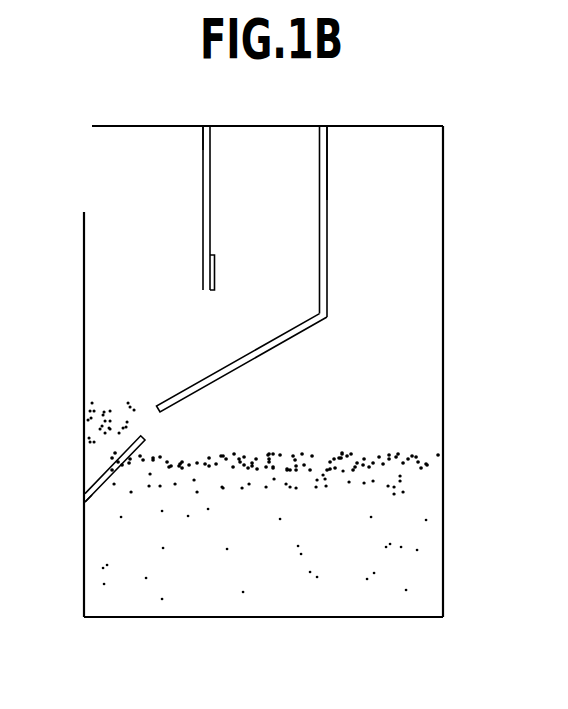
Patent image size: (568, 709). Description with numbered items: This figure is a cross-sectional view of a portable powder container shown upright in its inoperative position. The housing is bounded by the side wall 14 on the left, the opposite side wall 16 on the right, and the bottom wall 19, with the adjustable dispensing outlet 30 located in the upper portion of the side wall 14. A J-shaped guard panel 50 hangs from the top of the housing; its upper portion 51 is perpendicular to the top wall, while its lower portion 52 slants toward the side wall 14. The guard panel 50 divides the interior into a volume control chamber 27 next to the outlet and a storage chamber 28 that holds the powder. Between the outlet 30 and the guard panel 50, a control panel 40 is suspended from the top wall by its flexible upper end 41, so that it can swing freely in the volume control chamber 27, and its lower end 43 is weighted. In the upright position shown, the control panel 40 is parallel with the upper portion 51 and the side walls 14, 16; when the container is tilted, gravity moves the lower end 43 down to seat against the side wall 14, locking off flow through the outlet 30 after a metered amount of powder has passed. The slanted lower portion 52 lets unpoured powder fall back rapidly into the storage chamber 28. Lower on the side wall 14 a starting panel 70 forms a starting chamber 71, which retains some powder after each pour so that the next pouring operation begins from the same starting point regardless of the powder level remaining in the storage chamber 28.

The side wall 14 is at (85, 382).
The side wall 16 is at (444, 428).
The bottom wall 19 is at (369, 620).
The volume control chamber 27 is at (152, 320).
The storage chamber 28 is at (396, 510).
The adjustable dispensing outlet 30 is at (97, 163).
The control panel 40 is at (203, 212).
The upper end of control panel 41 is at (202, 147).
The lower end of control panel 43 is at (203, 270).
The guard panel 50 is at (333, 283).
The upper portion of guard panel 51 is at (327, 165).
The lower portion of guard panel 52 is at (257, 358).
The starting panel 70 is at (103, 490).
The starting chamber 71 is at (105, 471).